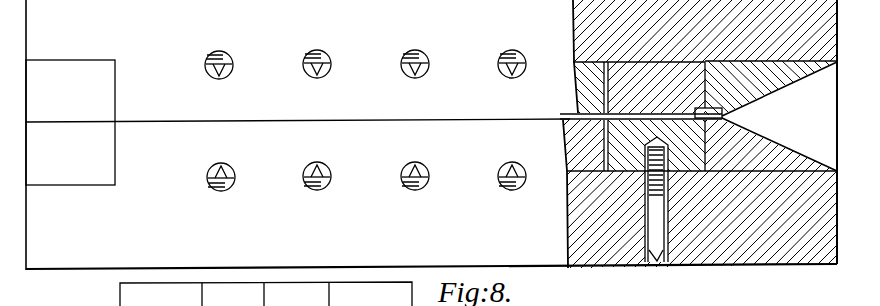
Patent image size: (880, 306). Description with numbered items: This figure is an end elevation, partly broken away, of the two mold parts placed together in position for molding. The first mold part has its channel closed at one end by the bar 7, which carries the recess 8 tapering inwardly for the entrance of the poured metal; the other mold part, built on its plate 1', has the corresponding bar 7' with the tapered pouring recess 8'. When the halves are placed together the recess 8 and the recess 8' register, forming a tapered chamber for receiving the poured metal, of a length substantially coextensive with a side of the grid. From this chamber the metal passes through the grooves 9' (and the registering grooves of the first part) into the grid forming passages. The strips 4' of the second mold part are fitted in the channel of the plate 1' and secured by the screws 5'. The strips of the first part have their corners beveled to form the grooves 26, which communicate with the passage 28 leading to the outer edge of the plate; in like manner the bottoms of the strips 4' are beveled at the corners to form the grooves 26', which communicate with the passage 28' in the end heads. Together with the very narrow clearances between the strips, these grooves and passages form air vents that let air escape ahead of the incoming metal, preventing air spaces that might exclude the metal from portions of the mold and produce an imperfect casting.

The passage 28 is at (335, 135).
The groove 26 is at (339, 55).
The groove 26' is at (371, 191).
The passage 28' is at (349, 202).
The bar 7 is at (772, 102).
The recess 8 is at (821, 95).
The bar 7' is at (777, 134).
The tapered pouring recess 8' is at (824, 133).
The plate 1' is at (635, 219).
The screw 5' is at (690, 269).
The strip 4' is at (731, 226).
The groove 9' is at (757, 211).